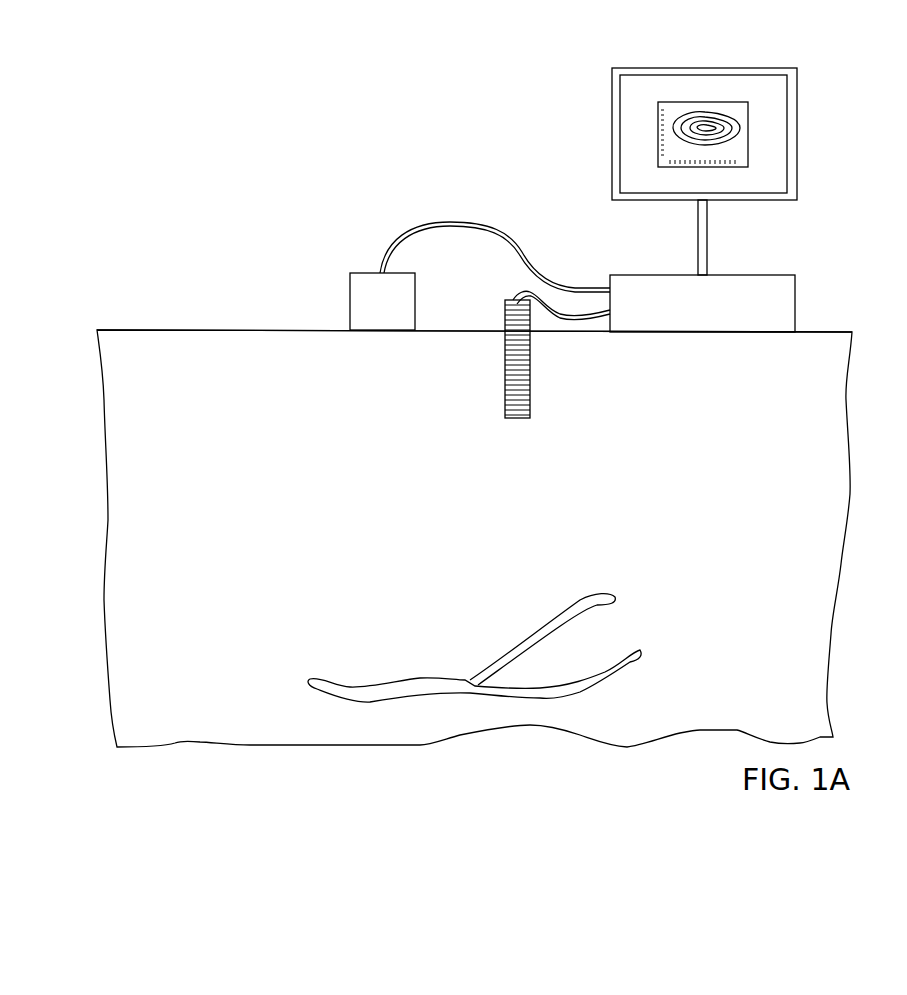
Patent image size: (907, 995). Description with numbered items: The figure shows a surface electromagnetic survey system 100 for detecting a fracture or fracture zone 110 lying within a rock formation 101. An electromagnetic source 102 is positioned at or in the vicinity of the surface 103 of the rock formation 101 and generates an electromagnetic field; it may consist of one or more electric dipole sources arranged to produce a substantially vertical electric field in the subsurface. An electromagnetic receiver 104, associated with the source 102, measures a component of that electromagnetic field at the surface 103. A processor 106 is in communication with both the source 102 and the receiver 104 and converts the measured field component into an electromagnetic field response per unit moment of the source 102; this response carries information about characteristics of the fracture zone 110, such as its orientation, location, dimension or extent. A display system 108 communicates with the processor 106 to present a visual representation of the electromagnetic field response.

The surface electromagnetic survey system 100 is at (126, 119).
The rock formation 101 is at (474, 538).
The electromagnetic source 102 is at (505, 373).
The surface 103 is at (203, 329).
The electromagnetic receiver 104 is at (480, 276).
The processor 106 is at (778, 275).
The display system 108 is at (668, 68).
The fracture zone 110 is at (490, 657).